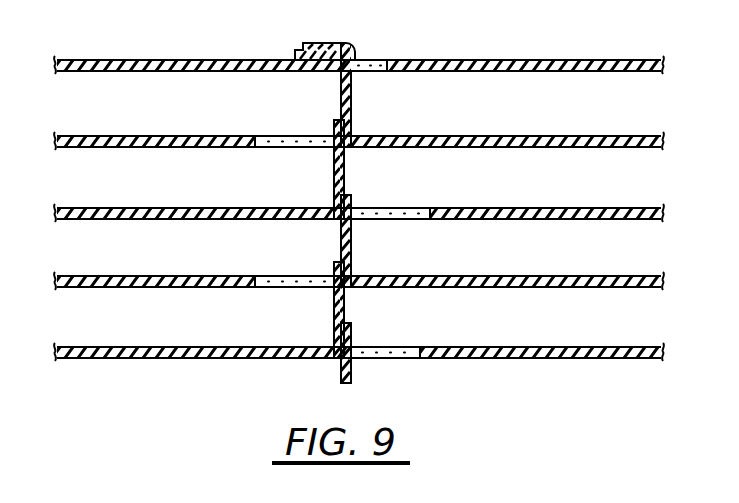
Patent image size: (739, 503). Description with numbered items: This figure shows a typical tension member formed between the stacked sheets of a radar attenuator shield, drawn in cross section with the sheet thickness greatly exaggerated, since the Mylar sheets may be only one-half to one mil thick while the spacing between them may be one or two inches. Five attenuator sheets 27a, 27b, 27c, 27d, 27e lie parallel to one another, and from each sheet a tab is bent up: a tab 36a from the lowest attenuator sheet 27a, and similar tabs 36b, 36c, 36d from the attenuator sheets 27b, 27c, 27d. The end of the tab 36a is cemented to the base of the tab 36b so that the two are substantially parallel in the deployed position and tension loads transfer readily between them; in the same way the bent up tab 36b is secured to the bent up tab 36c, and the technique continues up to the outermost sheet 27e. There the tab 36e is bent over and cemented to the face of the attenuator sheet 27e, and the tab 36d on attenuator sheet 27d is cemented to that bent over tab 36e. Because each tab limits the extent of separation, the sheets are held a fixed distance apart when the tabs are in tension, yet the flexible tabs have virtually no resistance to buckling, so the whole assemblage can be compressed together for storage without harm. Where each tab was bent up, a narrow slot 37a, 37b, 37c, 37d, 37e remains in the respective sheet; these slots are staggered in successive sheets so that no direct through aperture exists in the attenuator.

The attenuator sheet 27a is at (490, 347).
The attenuator sheet 27b is at (490, 276).
The attenuator sheet 27c is at (490, 208).
The attenuator sheet 27d is at (490, 136).
The outermost attenuator sheet 27e is at (490, 60).
The tab 36a is at (335, 325).
The tab 36b is at (352, 256).
The tab 36c is at (334, 185).
The tab 36d is at (352, 118).
The tab 36e is at (296, 57).
The slot 37a is at (360, 347).
The slot 37b is at (305, 276).
The slot 37c is at (370, 208).
The slot 37d is at (300, 136).
The slot 37e is at (358, 58).